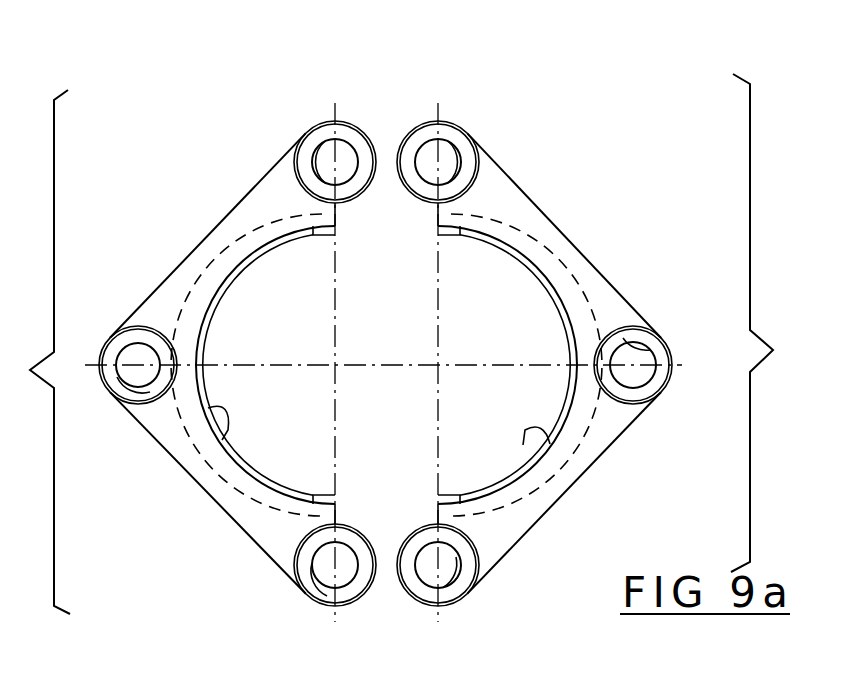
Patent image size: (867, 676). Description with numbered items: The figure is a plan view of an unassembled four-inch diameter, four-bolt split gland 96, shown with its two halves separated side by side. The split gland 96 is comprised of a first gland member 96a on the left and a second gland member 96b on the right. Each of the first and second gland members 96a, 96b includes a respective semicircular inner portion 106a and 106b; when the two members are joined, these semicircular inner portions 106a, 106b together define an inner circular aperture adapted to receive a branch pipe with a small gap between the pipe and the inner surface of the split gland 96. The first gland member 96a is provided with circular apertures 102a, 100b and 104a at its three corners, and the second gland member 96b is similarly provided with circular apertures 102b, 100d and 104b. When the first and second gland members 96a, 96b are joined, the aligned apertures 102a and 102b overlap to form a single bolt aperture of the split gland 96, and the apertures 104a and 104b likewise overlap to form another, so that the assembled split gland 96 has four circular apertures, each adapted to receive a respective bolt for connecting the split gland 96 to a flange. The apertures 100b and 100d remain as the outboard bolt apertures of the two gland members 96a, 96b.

The split gland 96 is at (176, 201).
The first gland member 96a is at (268, 193).
The second gland member 96b is at (517, 203).
The circular aperture 100b is at (123, 407).
The circular aperture 100d is at (650, 349).
The circular aperture 102a is at (327, 157).
The circular aperture 102b is at (450, 147).
The circular aperture 104a is at (320, 604).
The circular aperture 104b is at (440, 580).
The semicircular inner portion 106a is at (222, 445).
The semicircular inner portion 106b is at (533, 450).